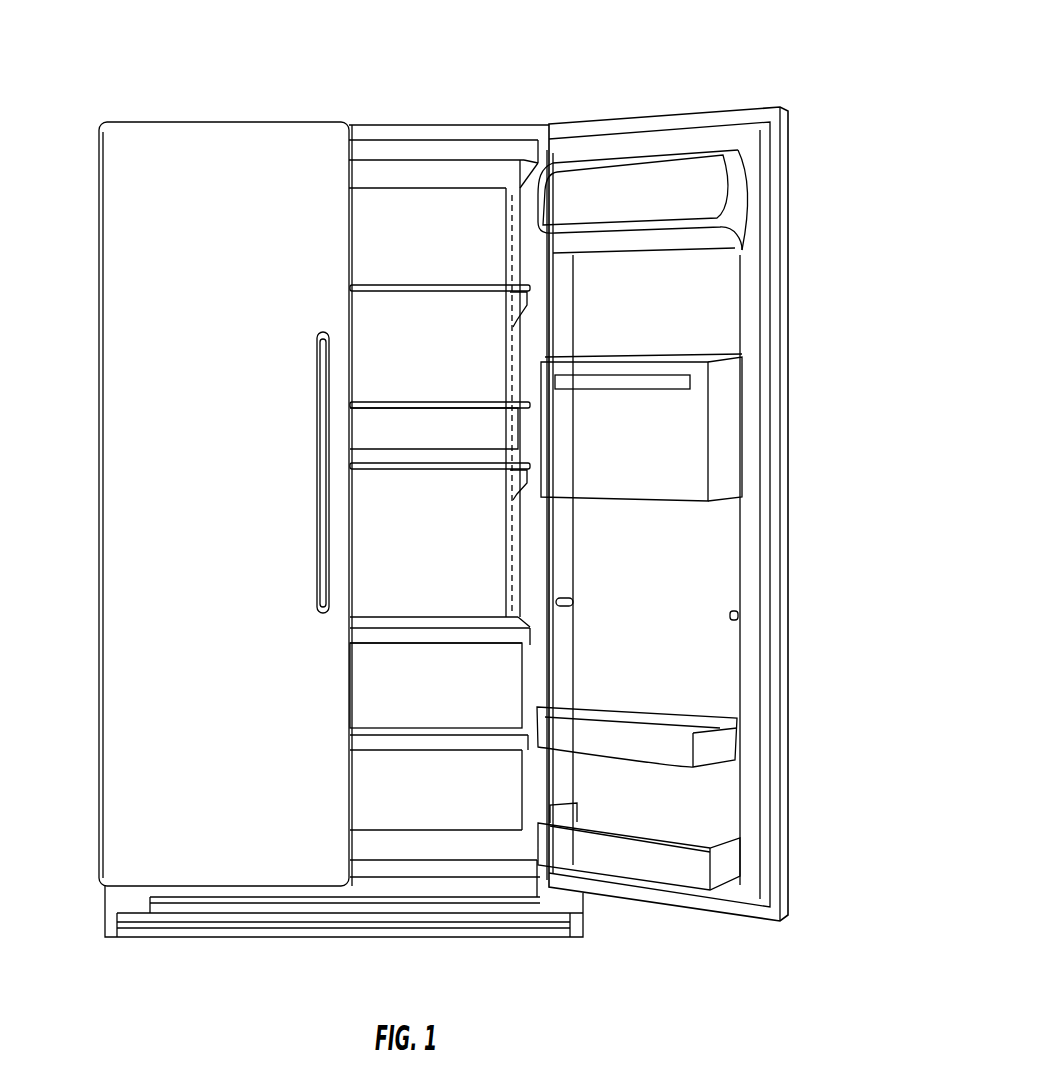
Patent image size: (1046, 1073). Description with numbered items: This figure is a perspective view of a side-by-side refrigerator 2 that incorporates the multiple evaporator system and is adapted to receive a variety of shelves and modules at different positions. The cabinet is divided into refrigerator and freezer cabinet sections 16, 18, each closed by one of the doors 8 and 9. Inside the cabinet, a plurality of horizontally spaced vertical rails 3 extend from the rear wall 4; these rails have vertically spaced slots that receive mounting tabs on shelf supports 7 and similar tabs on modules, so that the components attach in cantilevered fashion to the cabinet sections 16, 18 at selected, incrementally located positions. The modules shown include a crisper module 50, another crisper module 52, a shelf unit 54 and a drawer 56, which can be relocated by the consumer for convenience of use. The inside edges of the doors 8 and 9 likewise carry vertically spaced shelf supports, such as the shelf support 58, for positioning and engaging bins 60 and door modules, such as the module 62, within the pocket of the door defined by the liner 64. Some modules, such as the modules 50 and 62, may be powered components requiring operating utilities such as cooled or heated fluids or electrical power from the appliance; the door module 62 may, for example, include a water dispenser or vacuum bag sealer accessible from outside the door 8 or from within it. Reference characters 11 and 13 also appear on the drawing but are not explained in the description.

The refrigerator 2 is at (441, 503).
The vertical rails 3 is at (503, 392).
The rear wall 4 is at (440, 567).
The shelf supports 7 is at (517, 302).
The door 8 is at (687, 514).
The door 9 is at (133, 328).
The door liner edge 11 is at (535, 553).
The freezer door edge 13 is at (100, 558).
The refrigerator cabinet section 16 is at (434, 195).
The freezer cabinet section 18 is at (196, 483).
The crisper module 50 is at (433, 815).
The crisper module 52 is at (463, 701).
The shelf unit module 54 is at (380, 285).
The drawer module 56 is at (407, 428).
The shelf support 58 is at (735, 615).
The bins 60 is at (738, 208).
The door module 62 is at (727, 447).
The liner 64 is at (694, 569).